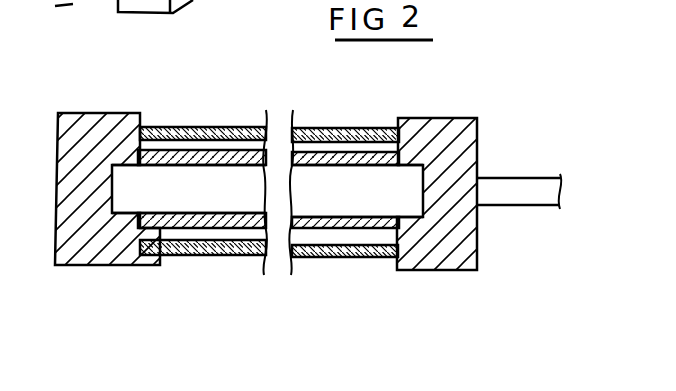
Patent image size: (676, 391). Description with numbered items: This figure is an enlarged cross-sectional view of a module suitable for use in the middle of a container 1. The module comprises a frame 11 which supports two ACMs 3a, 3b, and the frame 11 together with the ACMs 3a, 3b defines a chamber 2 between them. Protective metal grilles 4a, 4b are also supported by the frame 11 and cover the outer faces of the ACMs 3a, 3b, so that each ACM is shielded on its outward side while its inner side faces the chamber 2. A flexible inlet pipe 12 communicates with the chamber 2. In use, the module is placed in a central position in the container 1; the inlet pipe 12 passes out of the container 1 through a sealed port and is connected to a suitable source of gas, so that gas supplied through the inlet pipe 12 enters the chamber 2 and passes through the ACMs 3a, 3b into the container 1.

The container 1 is at (93, 262).
The chamber 2 is at (210, 206).
The ACM 3a is at (337, 168).
The ACM 3b is at (367, 214).
The protective metal grille 4a is at (316, 128).
The protective metal grille 4b is at (340, 256).
The frame 11 is at (468, 137).
The flexible inlet pipe 12 is at (517, 198).